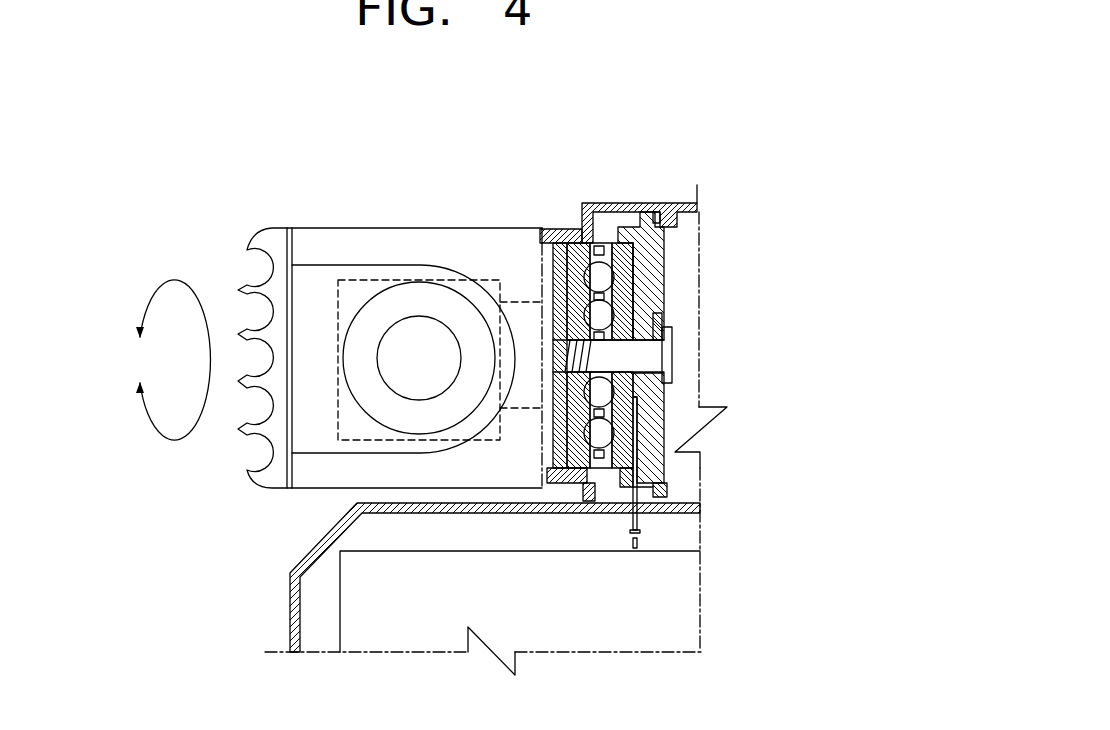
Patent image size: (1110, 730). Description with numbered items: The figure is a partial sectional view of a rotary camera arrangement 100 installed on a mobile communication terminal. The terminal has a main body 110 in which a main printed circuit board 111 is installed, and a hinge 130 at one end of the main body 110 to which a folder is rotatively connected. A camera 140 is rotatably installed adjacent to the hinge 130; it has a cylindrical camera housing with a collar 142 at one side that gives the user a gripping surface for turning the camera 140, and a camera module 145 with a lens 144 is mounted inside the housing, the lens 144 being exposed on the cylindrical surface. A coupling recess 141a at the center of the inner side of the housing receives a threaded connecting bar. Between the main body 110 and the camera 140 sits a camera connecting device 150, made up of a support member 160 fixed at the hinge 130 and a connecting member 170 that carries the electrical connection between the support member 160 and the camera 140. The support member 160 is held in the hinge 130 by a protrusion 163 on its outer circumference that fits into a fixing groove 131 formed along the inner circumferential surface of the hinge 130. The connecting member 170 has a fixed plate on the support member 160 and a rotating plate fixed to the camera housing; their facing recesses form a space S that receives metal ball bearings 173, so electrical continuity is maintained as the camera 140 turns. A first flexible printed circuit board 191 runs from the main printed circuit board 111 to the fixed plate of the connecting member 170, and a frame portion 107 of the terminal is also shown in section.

The hinge assembly 100 is at (236, 113).
The main body 110 is at (280, 573).
The main printed circuit board 111 is at (347, 614).
The hinge 130 is at (675, 191).
The fixing groove 131 is at (665, 228).
The camera 140 is at (418, 221).
The coupling recess 141a is at (545, 377).
The collar 142 is at (240, 286).
The lens 144 is at (405, 338).
The camera module 145 is at (348, 288).
The camera connecting device 150 is at (575, 131).
The support member 160 is at (640, 232).
The connecting member 170 is at (597, 232).
The bearings 173 is at (607, 392).
The frame 107 is at (628, 448).
The protrusion 163 is at (633, 492).
The first flexible printed circuit board 191 is at (637, 527).
The space S is at (633, 280).